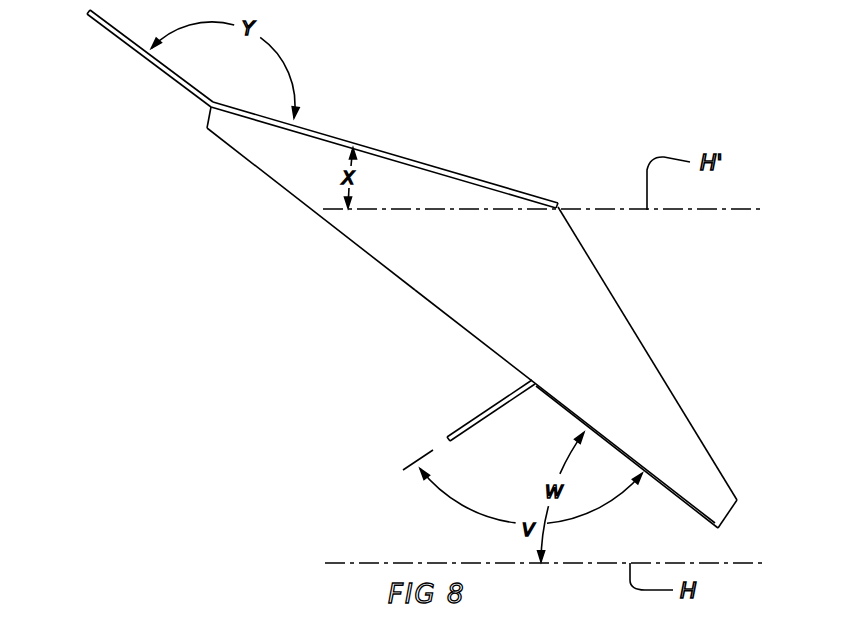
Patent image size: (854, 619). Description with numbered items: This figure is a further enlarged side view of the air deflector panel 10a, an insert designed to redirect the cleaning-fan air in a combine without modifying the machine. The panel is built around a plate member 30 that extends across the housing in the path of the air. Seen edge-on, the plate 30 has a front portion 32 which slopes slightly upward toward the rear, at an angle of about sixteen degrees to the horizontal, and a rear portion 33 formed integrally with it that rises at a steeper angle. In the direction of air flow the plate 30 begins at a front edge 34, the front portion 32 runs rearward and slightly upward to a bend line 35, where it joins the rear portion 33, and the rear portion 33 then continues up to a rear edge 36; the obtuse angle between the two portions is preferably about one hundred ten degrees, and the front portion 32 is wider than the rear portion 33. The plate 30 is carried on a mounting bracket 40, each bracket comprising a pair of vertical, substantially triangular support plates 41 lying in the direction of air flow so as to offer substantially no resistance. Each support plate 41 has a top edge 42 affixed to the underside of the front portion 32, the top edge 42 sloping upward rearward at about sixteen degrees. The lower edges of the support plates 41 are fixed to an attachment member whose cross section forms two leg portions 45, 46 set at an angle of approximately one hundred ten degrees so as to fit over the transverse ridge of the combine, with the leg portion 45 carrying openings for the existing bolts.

The air deflector panel 10a is at (472, 158).
The plate member 30 is at (285, 128).
The front portion 32 is at (332, 133).
The rear portion 33 is at (157, 67).
The front edge 34 is at (558, 206).
The bend line 35 is at (210, 105).
The rear edge 36 is at (82, 18).
The mounting bracket 40 is at (650, 357).
The support plate 41 is at (412, 250).
The top edge 42 is at (350, 220).
The leg portion 45 is at (697, 498).
The leg portion 46 is at (455, 423).